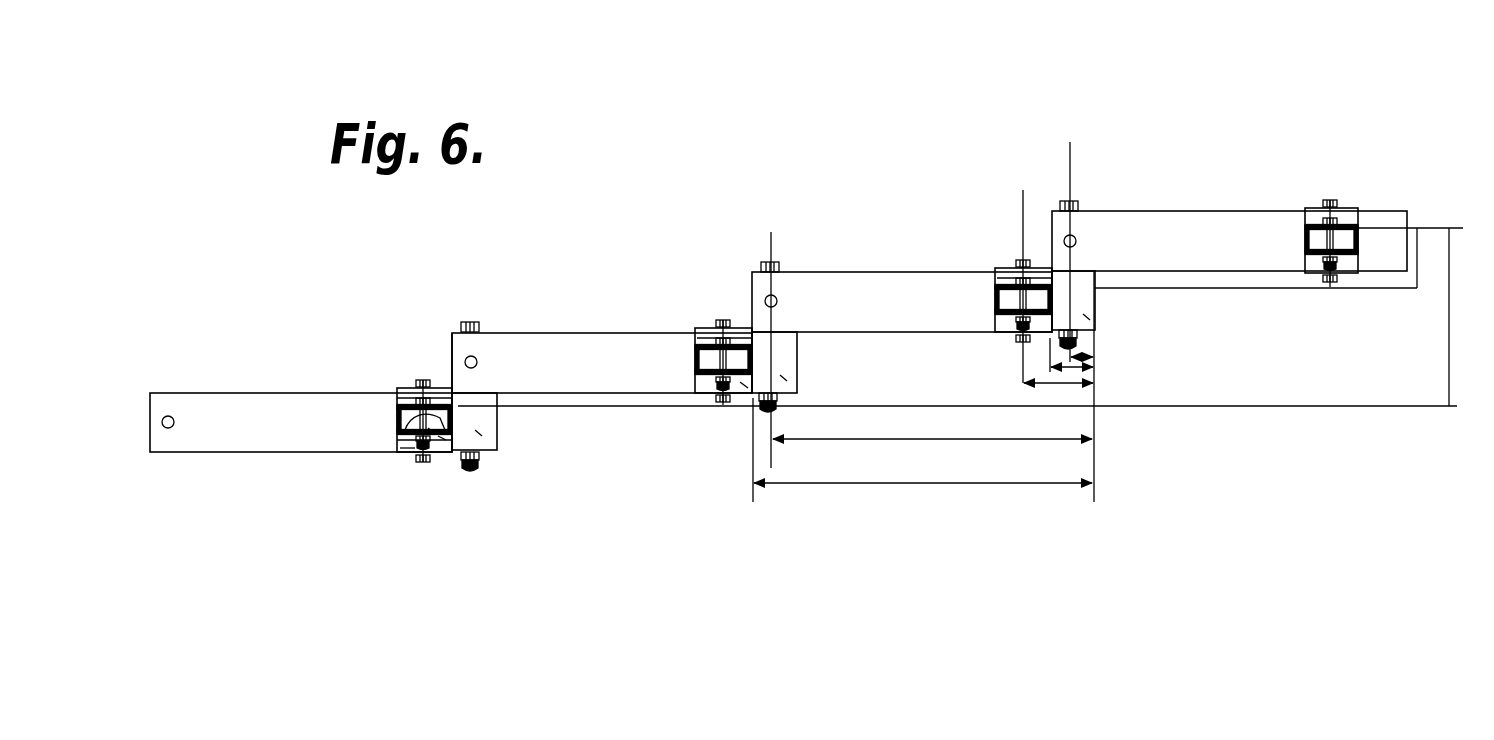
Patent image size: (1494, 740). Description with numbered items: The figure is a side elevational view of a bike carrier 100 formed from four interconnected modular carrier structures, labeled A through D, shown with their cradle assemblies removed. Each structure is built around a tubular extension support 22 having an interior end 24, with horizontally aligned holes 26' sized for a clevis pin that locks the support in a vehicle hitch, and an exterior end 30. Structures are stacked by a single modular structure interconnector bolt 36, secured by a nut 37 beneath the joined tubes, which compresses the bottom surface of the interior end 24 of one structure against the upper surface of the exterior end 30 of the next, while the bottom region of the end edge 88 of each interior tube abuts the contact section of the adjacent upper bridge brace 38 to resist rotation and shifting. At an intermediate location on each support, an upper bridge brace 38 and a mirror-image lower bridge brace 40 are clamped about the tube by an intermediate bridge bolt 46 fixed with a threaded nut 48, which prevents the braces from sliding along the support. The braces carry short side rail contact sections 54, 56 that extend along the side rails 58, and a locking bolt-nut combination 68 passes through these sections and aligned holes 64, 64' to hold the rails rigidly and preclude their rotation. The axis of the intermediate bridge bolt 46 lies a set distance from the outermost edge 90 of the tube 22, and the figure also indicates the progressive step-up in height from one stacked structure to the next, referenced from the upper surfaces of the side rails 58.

The extension support 22 is at (478, 432).
The interior end 24 is at (452, 340).
The horizontally aligned hole 26' is at (648, 277).
The exterior end 30 is at (476, 410).
The modular structure interconnector bolt 36 is at (471, 321).
The nut 37 is at (481, 462).
The upper bridge brace 38 is at (406, 388).
The lower bridge brace 40 is at (403, 451).
The intermediate bridge bolt 46 is at (420, 386).
The threaded nut 48 is at (423, 458).
The side rail contact section 54 is at (442, 437).
The side rail contact section 56 is at (423, 396).
The side rail 58 is at (396, 407).
The aligned hole 64 is at (376, 467).
The aligned hole 64' is at (416, 479).
The bolt-nut combination 68 is at (446, 452).
The end edge 88 is at (751, 308).
The outermost edge 90 is at (1097, 302).
The bike carrier 100 is at (1309, 142).